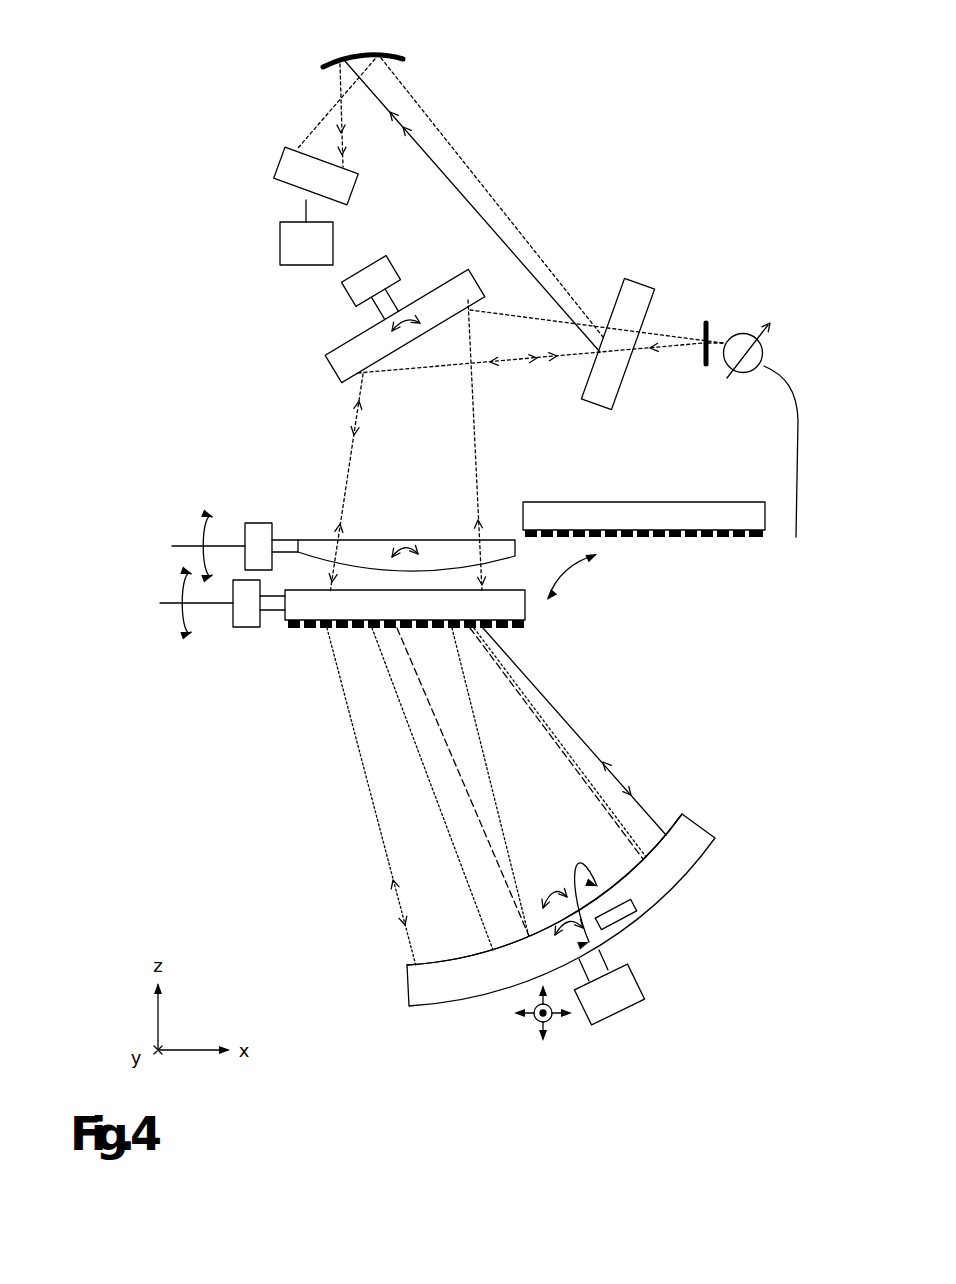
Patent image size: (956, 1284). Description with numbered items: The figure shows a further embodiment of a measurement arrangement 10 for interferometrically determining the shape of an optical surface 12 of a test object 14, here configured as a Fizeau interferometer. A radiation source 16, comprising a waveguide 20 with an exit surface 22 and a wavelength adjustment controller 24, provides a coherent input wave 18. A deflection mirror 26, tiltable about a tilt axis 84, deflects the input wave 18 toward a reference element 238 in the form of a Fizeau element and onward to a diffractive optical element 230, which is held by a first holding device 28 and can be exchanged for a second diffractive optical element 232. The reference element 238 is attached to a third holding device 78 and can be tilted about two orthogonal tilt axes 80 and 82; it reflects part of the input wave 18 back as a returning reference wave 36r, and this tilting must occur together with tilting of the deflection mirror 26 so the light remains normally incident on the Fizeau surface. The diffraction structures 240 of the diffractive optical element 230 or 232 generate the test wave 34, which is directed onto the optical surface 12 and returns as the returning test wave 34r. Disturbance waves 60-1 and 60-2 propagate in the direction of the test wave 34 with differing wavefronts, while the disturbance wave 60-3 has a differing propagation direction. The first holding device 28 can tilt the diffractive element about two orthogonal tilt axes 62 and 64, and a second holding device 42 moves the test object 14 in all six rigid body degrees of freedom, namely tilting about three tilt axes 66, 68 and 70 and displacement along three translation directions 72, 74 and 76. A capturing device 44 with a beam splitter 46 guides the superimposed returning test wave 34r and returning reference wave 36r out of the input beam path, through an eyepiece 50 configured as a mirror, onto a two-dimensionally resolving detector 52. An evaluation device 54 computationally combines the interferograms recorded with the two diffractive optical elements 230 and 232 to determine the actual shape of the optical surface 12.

The measurement arrangement 10 is at (270, 433).
The optical surface 12 is at (668, 818).
The test object 14 is at (681, 859).
The radiation source 16 is at (732, 314).
The input wave 18 is at (491, 368).
The waveguide 20 is at (795, 464).
The exit surface 22 is at (706, 321).
The wavelength adjustment controller 24 is at (746, 378).
The deflection mirror 26 is at (333, 372).
The first holding device 28 is at (245, 627).
The test wave 34 is at (403, 929).
The returning test wave 34r is at (356, 160).
The returning reference wave 36r is at (352, 137).
The second holding device 42 is at (649, 991).
The capturing device 44 is at (546, 205).
The beam splitter 46 is at (637, 281).
The eyepiece 50 is at (362, 48).
The two-dimensionally resolving detector 52 is at (345, 198).
The evaluation device 54 is at (290, 265).
The disturbance wave 60-1 is at (433, 793).
The disturbance wave 60-2 is at (553, 733).
The disturbance wave 60-3 is at (492, 809).
The tilt axis 62 is at (386, 633).
The tilt axis 64 is at (165, 604).
The tilt axis 66 is at (576, 948).
The tilt axis 68 is at (637, 920).
The tilt axis 70 is at (548, 894).
The translation direction 72 is at (517, 1018).
The translation direction 74 is at (548, 1044).
The translation direction 76 is at (532, 1026).
The third holding device 78 is at (258, 523).
The tilt axis 80 is at (406, 540).
The tilt axis 82 is at (185, 546).
The tilt axis 84 is at (410, 337).
The diffractive optical element 230 is at (528, 613).
The diffractive optical element 232 is at (545, 512).
The reference element 238 is at (455, 540).
The diffraction structures 240 is at (730, 540).